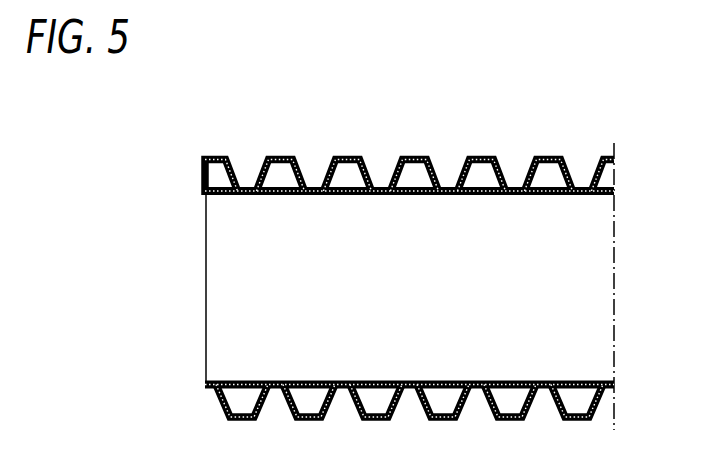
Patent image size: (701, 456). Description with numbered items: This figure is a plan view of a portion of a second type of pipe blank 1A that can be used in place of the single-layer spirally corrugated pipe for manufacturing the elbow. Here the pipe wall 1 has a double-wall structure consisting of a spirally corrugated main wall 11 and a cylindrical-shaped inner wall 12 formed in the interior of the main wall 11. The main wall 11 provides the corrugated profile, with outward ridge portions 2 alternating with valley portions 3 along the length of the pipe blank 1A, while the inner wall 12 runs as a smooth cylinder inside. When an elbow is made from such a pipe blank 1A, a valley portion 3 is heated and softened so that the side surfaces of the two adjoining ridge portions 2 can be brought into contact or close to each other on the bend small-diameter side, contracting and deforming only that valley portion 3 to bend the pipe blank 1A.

The pipe blank 1A is at (409, 234).
The pipe wall 1 is at (448, 114).
The spirally corrugated main wall 11 is at (482, 143).
The cylindrical-shaped inner wall 12 is at (408, 157).
The ridge portion 2 is at (346, 157).
The valley portion 3 is at (311, 187).